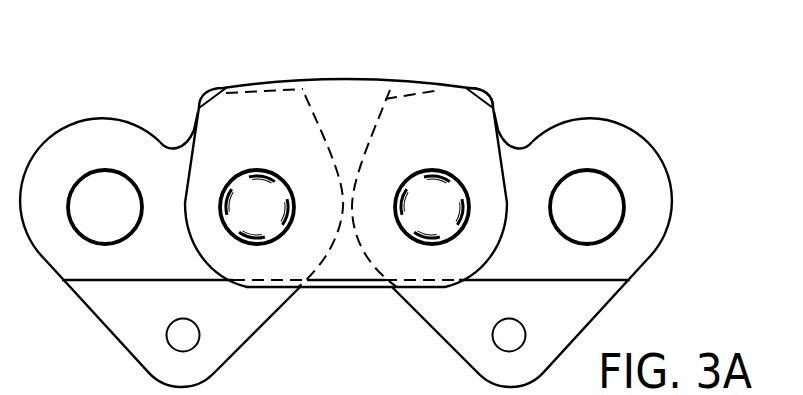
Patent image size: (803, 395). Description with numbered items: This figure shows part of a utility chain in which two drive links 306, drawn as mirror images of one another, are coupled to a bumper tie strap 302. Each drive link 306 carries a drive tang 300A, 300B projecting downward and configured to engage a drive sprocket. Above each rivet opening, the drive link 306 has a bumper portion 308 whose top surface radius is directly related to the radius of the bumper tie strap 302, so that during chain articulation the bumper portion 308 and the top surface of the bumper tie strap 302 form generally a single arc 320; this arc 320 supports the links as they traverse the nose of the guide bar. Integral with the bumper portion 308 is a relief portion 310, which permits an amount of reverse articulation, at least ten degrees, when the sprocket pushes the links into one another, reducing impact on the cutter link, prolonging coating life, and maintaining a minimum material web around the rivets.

The drive tang 300A is at (125, 325).
The drive tang 300B is at (457, 340).
The bumper tie strap 302 is at (377, 90).
The drive link 306 is at (65, 117).
The bumper portion 308 is at (202, 76).
The relief portion 310 is at (177, 133).
The arc 320 is at (498, 86).